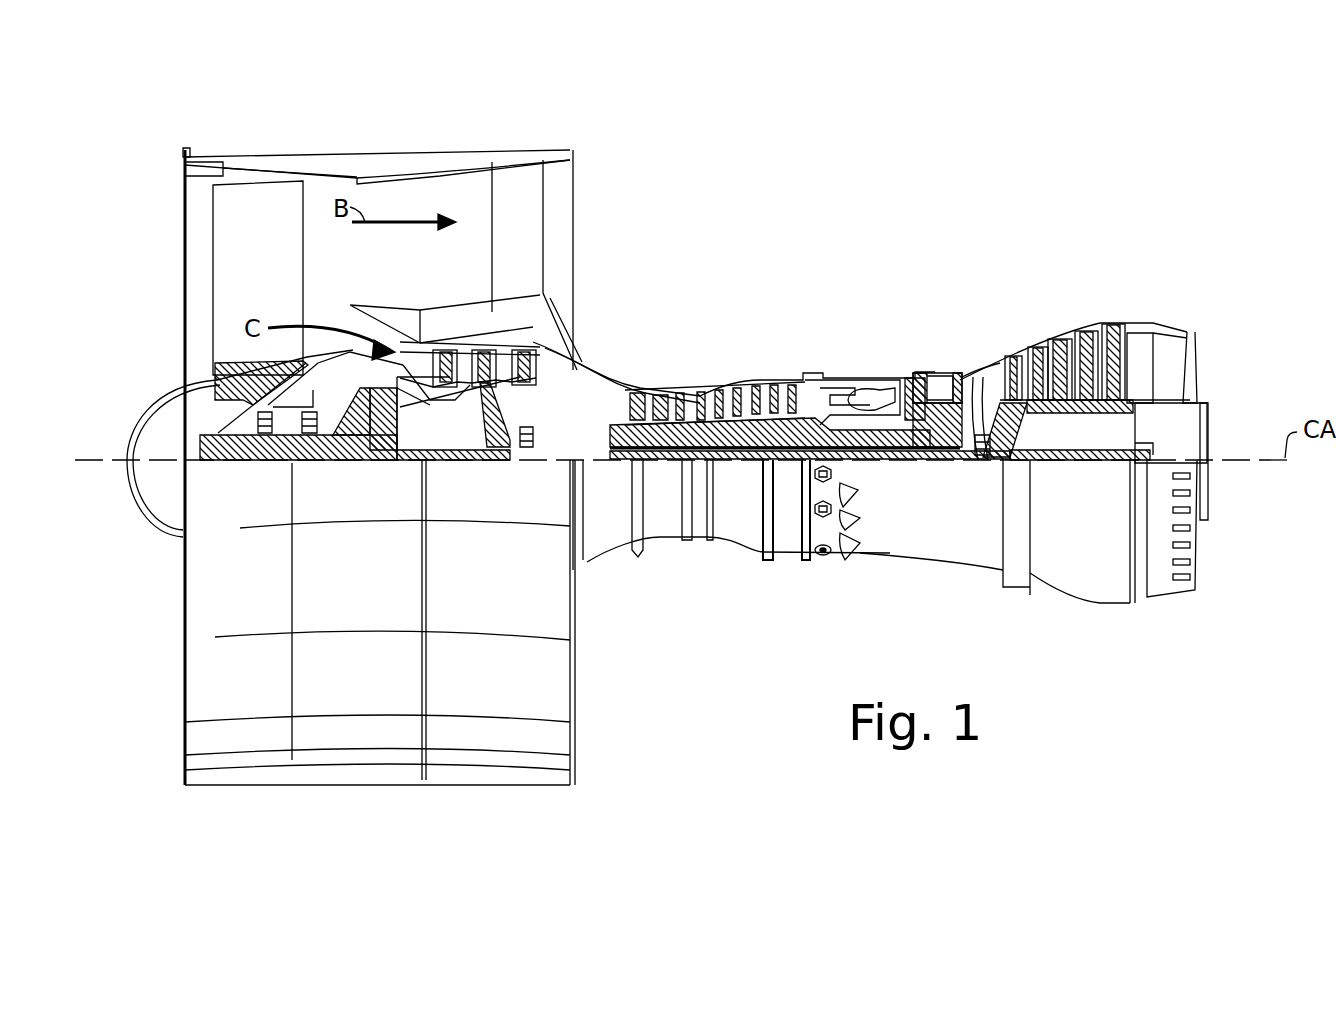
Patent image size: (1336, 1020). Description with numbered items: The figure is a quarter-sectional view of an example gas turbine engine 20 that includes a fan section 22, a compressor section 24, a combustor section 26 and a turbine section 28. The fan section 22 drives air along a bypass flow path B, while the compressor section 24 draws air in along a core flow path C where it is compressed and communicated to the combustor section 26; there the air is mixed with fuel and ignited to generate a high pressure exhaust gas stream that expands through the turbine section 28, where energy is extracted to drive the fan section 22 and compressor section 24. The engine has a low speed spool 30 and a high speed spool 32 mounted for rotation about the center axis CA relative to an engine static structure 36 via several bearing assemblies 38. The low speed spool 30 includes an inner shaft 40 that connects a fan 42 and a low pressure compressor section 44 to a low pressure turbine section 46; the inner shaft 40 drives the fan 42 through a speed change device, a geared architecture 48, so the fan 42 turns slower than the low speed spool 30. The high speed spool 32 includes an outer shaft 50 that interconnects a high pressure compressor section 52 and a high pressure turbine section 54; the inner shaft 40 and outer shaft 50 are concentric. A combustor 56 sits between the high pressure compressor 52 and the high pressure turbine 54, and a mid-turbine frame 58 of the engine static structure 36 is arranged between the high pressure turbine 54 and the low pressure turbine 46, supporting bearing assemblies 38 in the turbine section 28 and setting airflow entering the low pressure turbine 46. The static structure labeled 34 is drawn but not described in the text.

The gas turbine engine 20 is at (1030, 167).
The fan section 22 is at (400, 126).
The compressor section 24 is at (800, 265).
The combustor section 26 is at (910, 265).
The turbine section 28 is at (1150, 265).
The low speed spool 30 is at (745, 480).
The high speed spool 32 is at (770, 430).
The engine static structure 34 is at (1073, 413).
The engine static structure 36 is at (788, 585).
The bearing assemblies 38 is at (265, 440).
The inner shaft 40 is at (600, 465).
The fan 42 is at (272, 260).
The low pressure compressor section 44 is at (505, 365).
The low pressure turbine section 46 is at (1073, 348).
The geared architecture 48 is at (383, 440).
The outer shaft 50 is at (870, 445).
The high pressure compressor section 52 is at (697, 430).
The high pressure turbine section 54 is at (940, 378).
The combustor 56 is at (860, 400).
The mid-turbine frame 58 is at (983, 360).